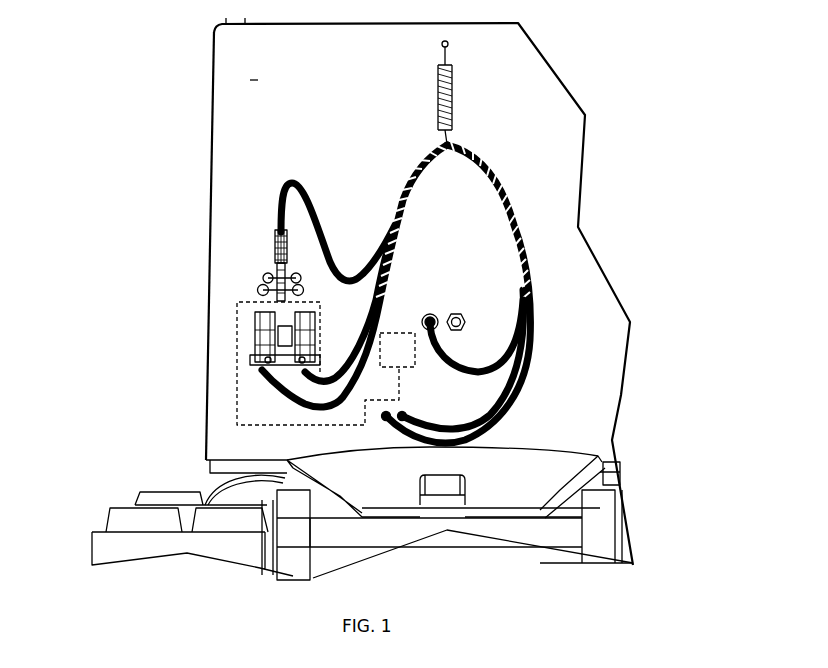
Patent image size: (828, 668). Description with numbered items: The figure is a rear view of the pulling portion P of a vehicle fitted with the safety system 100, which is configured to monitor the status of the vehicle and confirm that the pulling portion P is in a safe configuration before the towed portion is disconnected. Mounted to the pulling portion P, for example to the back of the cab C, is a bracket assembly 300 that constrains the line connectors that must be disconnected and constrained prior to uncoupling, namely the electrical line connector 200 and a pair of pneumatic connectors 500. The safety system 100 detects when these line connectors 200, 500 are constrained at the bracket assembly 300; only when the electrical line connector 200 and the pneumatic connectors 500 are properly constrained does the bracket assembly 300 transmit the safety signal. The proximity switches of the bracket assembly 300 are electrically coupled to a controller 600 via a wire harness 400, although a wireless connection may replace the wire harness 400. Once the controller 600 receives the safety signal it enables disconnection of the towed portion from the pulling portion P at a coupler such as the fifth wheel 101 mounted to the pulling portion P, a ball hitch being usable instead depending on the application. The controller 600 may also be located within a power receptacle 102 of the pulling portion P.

The safety system 100 is at (102, 332).
The fifth wheel 101 is at (612, 462).
The power receptacle 102 is at (438, 316).
The electrical line connector 200 is at (258, 277).
The bracket assembly 300 is at (255, 290).
The wire harness 400 is at (230, 322).
The pneumatic connectors 500 is at (290, 366).
The controller 600 is at (428, 367).
The pulling portion P is at (200, 150).
The cab C is at (258, 80).